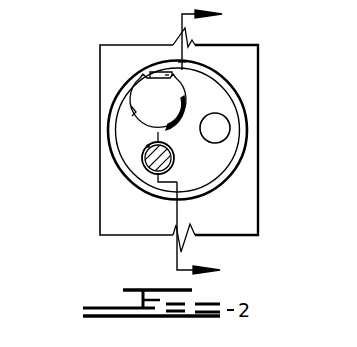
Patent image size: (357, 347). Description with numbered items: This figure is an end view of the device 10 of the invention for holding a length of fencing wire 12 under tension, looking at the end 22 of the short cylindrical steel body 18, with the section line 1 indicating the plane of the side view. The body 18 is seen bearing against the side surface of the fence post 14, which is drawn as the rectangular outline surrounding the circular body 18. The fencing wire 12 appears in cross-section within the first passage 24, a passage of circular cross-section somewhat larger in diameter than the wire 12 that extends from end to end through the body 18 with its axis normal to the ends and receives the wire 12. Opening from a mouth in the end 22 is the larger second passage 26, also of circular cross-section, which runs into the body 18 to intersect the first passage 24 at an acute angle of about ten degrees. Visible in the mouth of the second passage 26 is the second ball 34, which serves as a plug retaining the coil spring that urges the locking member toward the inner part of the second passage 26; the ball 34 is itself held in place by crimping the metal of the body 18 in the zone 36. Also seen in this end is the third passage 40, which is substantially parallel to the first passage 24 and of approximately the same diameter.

The section line 1- 1 is at (196, 140).
The device 10 is at (80, 124).
The fencing wire 12 is at (150, 168).
The fence post 14 is at (108, 183).
The cylindrical steel body 18 is at (218, 179).
The end 22 is at (201, 175).
The first passage 24 is at (145, 145).
The second passage 26 is at (135, 110).
The second ball 34 is at (147, 97).
The zone 36 is at (152, 77).
The third passage 40 is at (228, 126).